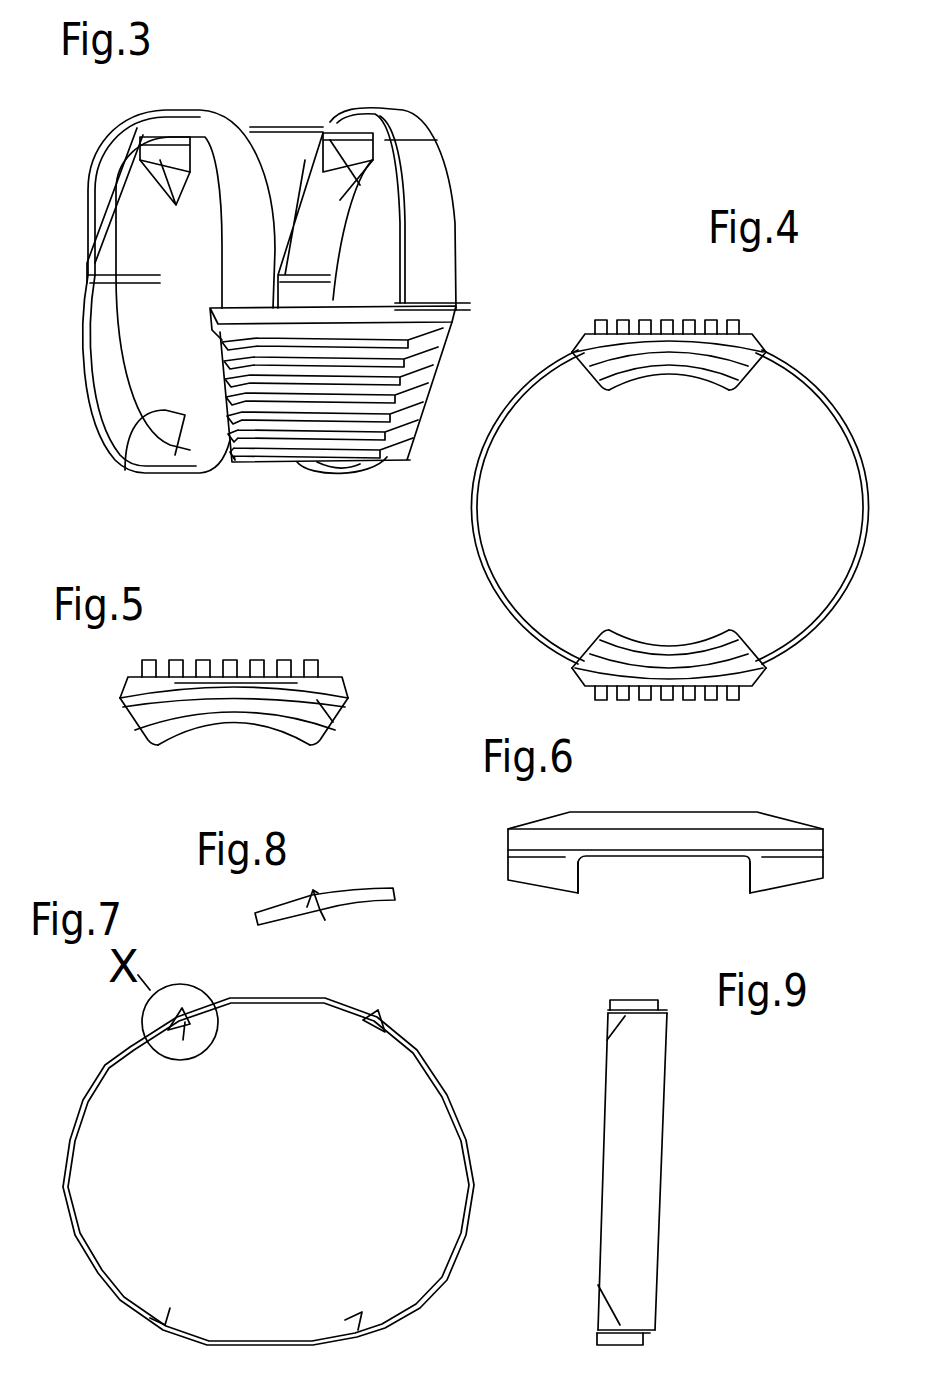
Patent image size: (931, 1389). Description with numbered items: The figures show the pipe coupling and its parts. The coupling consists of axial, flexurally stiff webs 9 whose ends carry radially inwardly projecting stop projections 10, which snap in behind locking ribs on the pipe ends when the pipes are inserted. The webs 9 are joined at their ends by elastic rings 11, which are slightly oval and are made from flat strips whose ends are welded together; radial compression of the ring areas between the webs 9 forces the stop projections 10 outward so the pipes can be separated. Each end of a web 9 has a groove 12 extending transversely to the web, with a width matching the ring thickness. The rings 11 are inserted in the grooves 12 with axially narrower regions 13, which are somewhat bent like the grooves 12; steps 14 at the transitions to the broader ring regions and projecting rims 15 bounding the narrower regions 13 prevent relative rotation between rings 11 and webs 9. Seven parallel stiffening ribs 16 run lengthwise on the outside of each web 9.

In FIG. 3, the web 9 is at (180, 288).
In FIG. 4, the web 9 is at (582, 343).
In FIG. 5, the web 9 is at (352, 679).
In FIG. 6, the web 9 is at (507, 835).
In FIG. 3, the stop projection 10 is at (175, 150).
In FIG. 4, the stop projection 10 is at (645, 382).
In FIG. 5, the stop projection 10 is at (178, 743).
In FIG. 6, the stop projection 10 is at (578, 880).
In FIG. 3, the ring 11 is at (215, 108).
In FIG. 4, the ring 11 is at (821, 392).
In FIG. 8, the ring 11 is at (340, 896).
In FIG. 7, the ring 11 is at (442, 1060).
In FIG. 9, the ring 11 is at (666, 1116).
In FIG. 5, the groove 12 is at (322, 708).
In FIG. 6, the groove 12 is at (802, 850).
In FIG. 7, the narrower region 13 is at (312, 1003).
In FIG. 9, the narrower region 13 is at (610, 1004).
In FIG. 9, the step 14 is at (665, 1010).
In FIG. 3, the rim 15 is at (350, 150).
In FIG. 8, the rim 15 is at (313, 920).
In FIG. 7, the rim 15 is at (374, 1022).
In FIG. 9, the rim 15 is at (604, 1040).
In FIG. 3, the stiffening rib 16 is at (348, 330).
In FIG. 4, the stiffening rib 16 is at (656, 318).
In FIG. 5, the stiffening rib 16 is at (203, 659).
In FIG. 6, the stiffening rib 16 is at (662, 822).